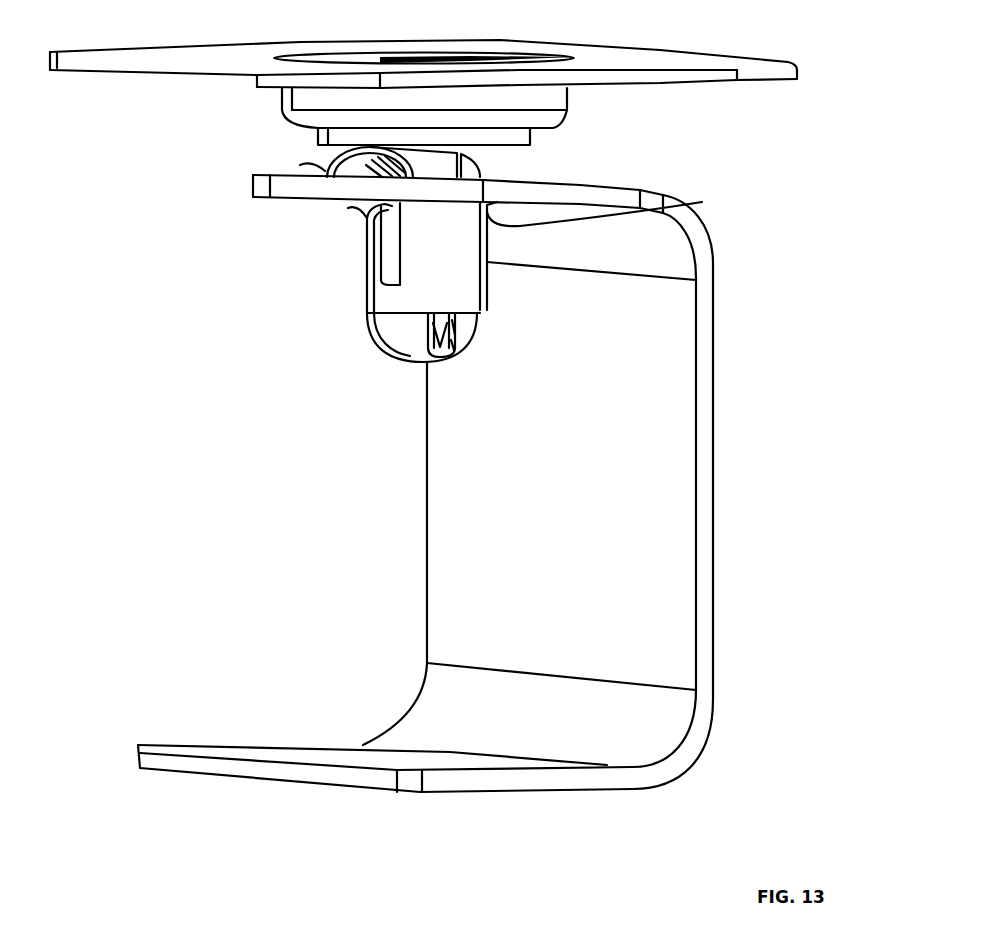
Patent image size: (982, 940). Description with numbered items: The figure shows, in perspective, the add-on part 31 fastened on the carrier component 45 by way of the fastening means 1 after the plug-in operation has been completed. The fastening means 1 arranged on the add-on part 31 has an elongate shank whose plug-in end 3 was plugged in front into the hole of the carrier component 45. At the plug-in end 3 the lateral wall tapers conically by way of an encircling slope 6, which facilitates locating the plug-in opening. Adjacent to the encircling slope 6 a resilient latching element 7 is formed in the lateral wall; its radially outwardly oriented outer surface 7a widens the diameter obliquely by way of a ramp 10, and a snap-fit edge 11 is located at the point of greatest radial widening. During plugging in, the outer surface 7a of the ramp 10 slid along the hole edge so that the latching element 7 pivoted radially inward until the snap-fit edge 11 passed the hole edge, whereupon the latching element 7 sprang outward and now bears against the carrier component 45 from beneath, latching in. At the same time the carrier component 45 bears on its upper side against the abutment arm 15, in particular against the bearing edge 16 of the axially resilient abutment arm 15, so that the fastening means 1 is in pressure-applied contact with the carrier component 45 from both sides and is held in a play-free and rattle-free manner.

The fastening means 1 is at (309, 302).
The plug-in end 3 is at (408, 337).
The encircling slope 6 is at (347, 403).
The latching element 7 is at (375, 262).
The outer surface 7a is at (305, 258).
The ramp 10 is at (373, 249).
The snap-fit edge 11 is at (348, 208).
The abutment arm 15 is at (345, 148).
The bearing edge 16 is at (300, 165).
The add-on part 31 is at (713, 80).
The carrier component 45 is at (706, 403).